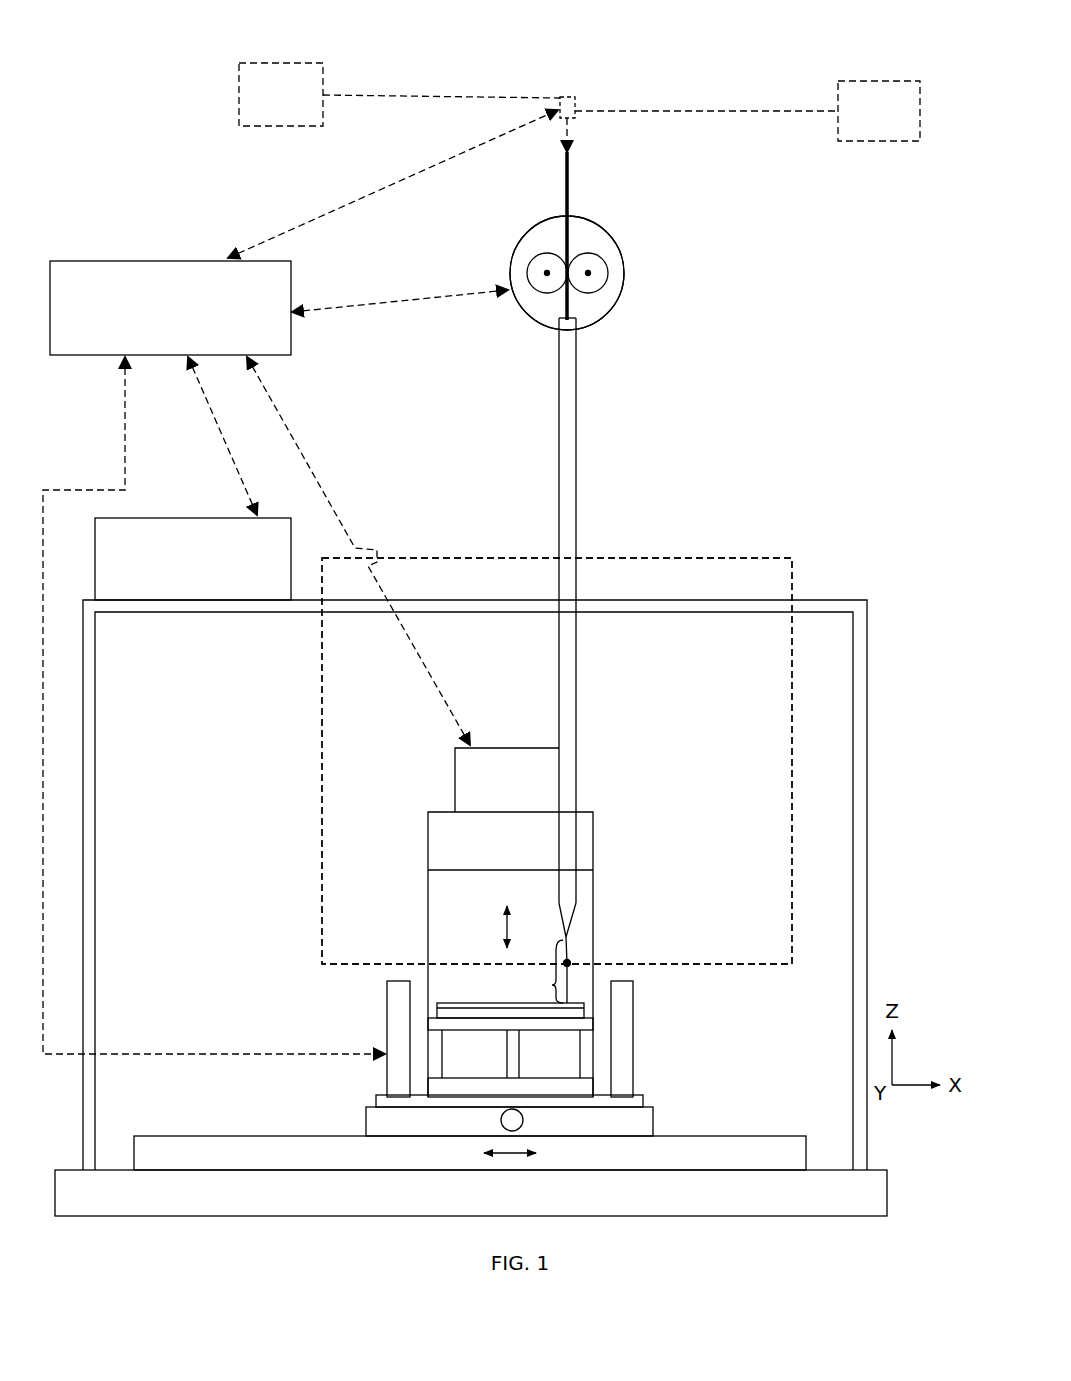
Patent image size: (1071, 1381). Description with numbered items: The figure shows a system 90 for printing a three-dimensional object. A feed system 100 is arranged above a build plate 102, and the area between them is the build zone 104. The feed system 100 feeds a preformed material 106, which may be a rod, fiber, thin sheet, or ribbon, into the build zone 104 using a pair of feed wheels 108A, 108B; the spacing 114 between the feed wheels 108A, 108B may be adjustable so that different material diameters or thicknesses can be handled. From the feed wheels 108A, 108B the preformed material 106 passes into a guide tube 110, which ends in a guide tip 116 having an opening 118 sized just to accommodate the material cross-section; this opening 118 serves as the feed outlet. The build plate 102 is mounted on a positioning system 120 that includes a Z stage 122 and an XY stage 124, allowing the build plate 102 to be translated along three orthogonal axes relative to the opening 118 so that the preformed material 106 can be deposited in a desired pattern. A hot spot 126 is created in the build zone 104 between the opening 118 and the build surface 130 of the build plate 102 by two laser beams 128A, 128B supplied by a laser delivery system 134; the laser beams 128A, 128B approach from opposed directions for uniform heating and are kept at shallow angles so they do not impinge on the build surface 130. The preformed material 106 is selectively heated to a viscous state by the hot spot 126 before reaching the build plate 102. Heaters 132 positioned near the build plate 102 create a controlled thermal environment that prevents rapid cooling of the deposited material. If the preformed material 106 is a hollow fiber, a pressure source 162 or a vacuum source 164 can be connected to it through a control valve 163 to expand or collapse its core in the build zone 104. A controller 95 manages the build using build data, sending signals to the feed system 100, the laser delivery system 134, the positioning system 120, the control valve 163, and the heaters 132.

The system 90 is at (543, 62).
The controller 95 is at (102, 260).
The feed system 100 is at (590, 213).
The build plate 102 is at (453, 1009).
The build zone 104 is at (537, 971).
The preformed material 106 is at (566, 203).
The feed wheel 108A is at (530, 275).
The feed wheel 108B is at (607, 275).
The guide tube 110 is at (577, 468).
The spacing 114 is at (570, 272).
The guide tip 116 is at (573, 928).
The opening 118 is at (569, 942).
The positioning system 120 is at (505, 745).
The Z stage 122 is at (428, 950).
The XY stage 124 is at (655, 1118).
The hot spot 126 is at (570, 964).
The laser beam 128A is at (337, 962).
The laser beam 128B is at (718, 962).
The build surface 130 is at (481, 1003).
The heaters 132 is at (393, 1042).
The laser delivery system 134 is at (190, 517).
The pressure source 162 is at (285, 110).
The control valve 163 is at (578, 103).
The vacuum source 164 is at (868, 131).